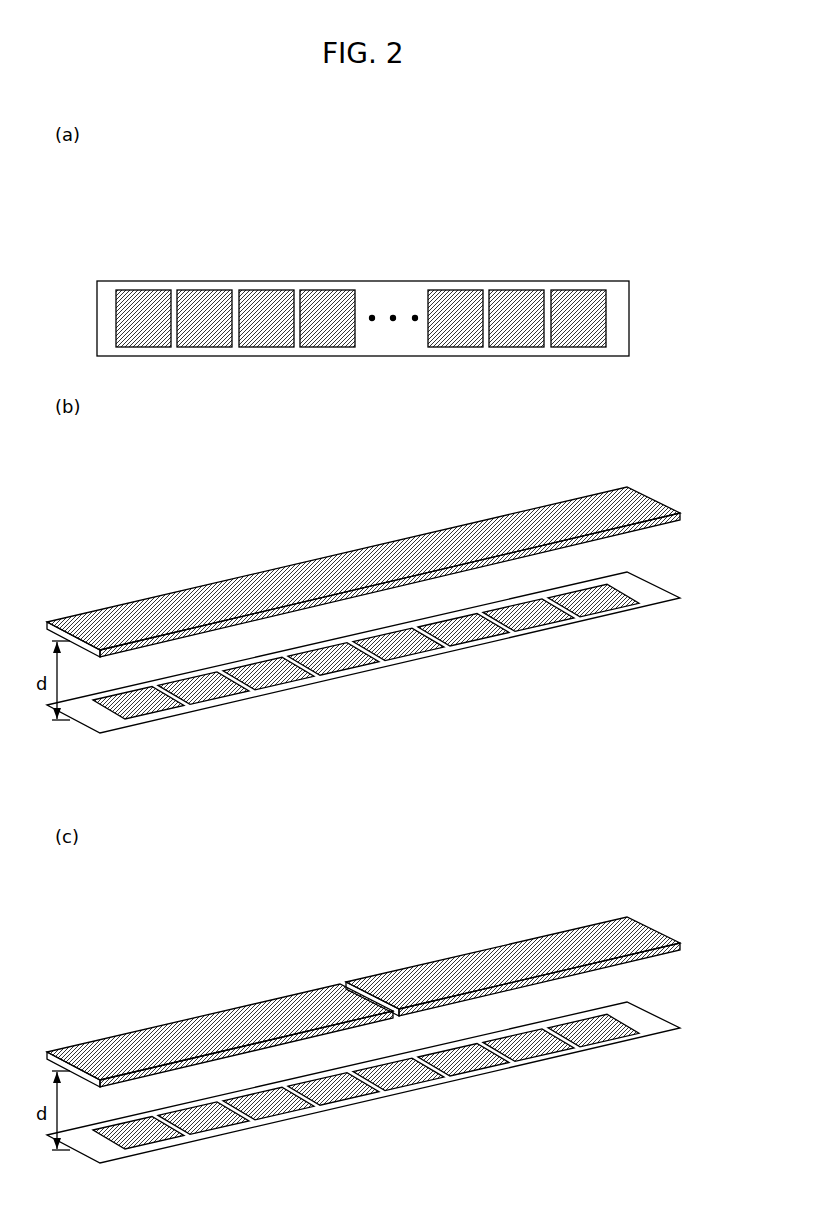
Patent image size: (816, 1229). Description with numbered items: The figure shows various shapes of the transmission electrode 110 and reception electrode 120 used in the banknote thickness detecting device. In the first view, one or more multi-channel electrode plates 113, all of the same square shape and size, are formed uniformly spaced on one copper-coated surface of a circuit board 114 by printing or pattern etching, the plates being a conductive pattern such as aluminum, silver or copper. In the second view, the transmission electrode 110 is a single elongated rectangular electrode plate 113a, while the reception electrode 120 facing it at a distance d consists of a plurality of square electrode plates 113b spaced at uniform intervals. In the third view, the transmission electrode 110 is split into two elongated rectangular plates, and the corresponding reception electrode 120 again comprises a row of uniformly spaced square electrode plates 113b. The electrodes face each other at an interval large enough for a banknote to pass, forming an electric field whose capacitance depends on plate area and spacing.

The transmission electrode 110 is at (597, 176).
The reception electrode 120 is at (662, 584).
The electrode plates 113 is at (282, 291).
The circuit board 114 is at (214, 281).
The electrode plate having an elongated rectangular shape 113a is at (646, 498).
The electrode plates having the same square shape 113b is at (598, 602).